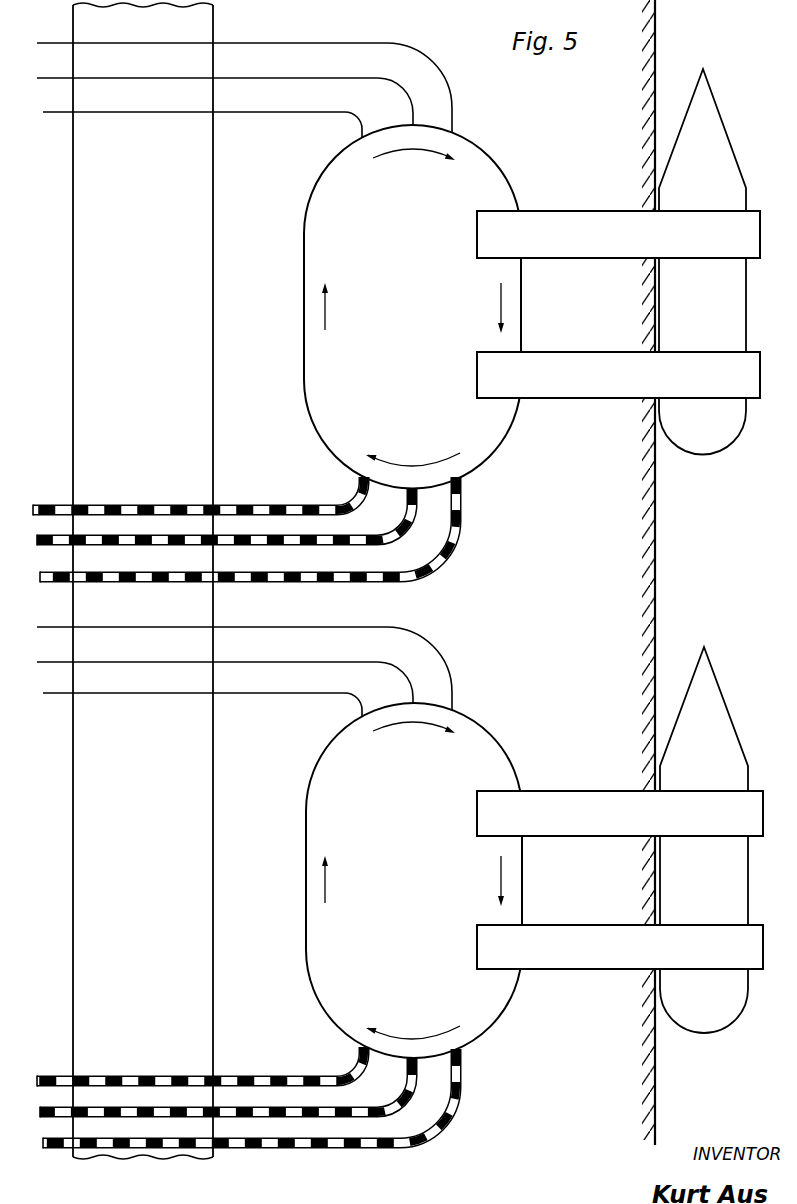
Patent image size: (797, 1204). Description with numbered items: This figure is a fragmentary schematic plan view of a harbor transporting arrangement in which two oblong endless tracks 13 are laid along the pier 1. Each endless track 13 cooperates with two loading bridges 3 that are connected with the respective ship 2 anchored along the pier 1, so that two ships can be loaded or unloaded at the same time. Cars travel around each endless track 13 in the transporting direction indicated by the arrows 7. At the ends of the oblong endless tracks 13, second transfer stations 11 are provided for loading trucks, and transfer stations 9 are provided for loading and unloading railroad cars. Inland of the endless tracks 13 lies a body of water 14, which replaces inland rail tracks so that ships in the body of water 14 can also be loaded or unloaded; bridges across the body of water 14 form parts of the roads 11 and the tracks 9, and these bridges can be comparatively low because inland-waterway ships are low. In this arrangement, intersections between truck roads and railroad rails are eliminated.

The pier 1 is at (657, 565).
The ship 2 is at (718, 440).
The loading bridge 3 is at (600, 240).
The arrows 7 is at (418, 150).
The transfer stations for railroad cars 9 is at (420, 567).
The second transfer stations 11 is at (272, 43).
The oblong endless track 13 is at (522, 290).
The inland body of water 14 is at (213, 417).